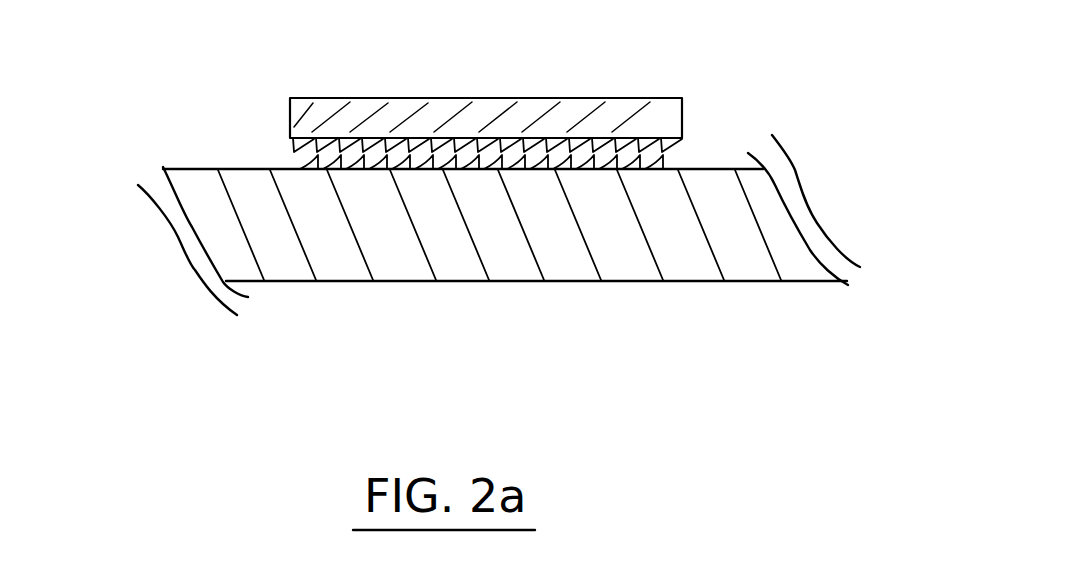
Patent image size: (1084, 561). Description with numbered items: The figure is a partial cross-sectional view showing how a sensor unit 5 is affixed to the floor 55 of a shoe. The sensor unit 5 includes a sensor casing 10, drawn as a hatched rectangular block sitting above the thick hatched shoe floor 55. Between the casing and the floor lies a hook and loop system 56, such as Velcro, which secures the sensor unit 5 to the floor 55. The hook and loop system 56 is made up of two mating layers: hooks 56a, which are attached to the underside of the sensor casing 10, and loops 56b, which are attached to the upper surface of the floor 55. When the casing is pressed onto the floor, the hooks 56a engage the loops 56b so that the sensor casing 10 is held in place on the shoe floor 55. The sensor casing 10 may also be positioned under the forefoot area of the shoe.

The sensor unit 5 is at (703, 103).
The sensor casing 10 is at (365, 98).
The floor 55 is at (565, 264).
The hook and loop system 56 is at (289, 155).
The hooks 56a is at (673, 145).
The loops 56b is at (668, 160).